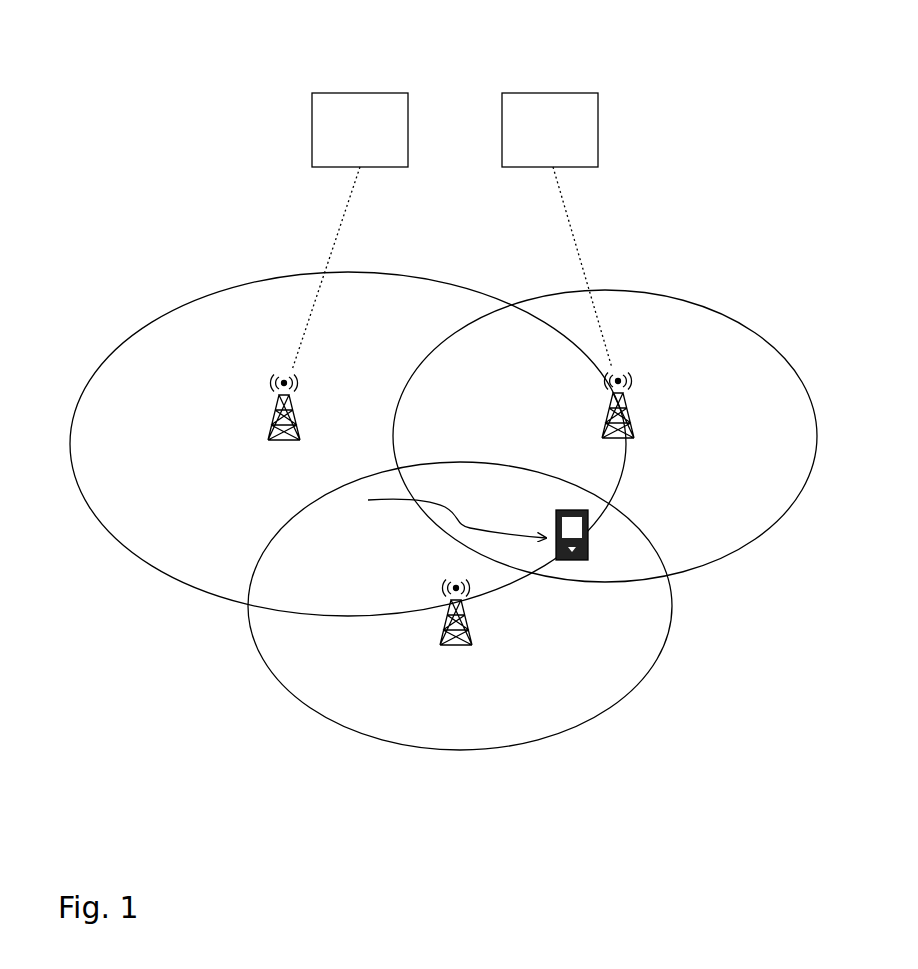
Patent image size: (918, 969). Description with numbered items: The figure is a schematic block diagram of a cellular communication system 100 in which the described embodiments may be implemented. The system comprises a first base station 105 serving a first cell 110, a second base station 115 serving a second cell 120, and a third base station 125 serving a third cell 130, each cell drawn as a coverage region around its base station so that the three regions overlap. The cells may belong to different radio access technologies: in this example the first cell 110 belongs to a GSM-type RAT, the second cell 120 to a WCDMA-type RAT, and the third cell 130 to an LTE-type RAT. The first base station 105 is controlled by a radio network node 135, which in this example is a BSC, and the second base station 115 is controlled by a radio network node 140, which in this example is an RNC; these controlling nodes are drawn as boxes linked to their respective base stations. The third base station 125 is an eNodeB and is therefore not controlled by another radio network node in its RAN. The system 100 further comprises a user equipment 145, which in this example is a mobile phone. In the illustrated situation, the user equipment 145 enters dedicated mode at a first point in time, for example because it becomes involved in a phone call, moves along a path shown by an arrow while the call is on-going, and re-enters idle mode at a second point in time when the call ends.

The cellular communication system 100 is at (150, 92).
The first base station 105 is at (277, 362).
The first cell 110 is at (134, 352).
The second base station 115 is at (640, 378).
The second cell 120 is at (638, 335).
The third base station 125 is at (489, 622).
The third cell 130 is at (418, 718).
The radio network node 135 is at (323, 122).
The radio network node 140 is at (537, 118).
The user equipment 145 is at (605, 528).